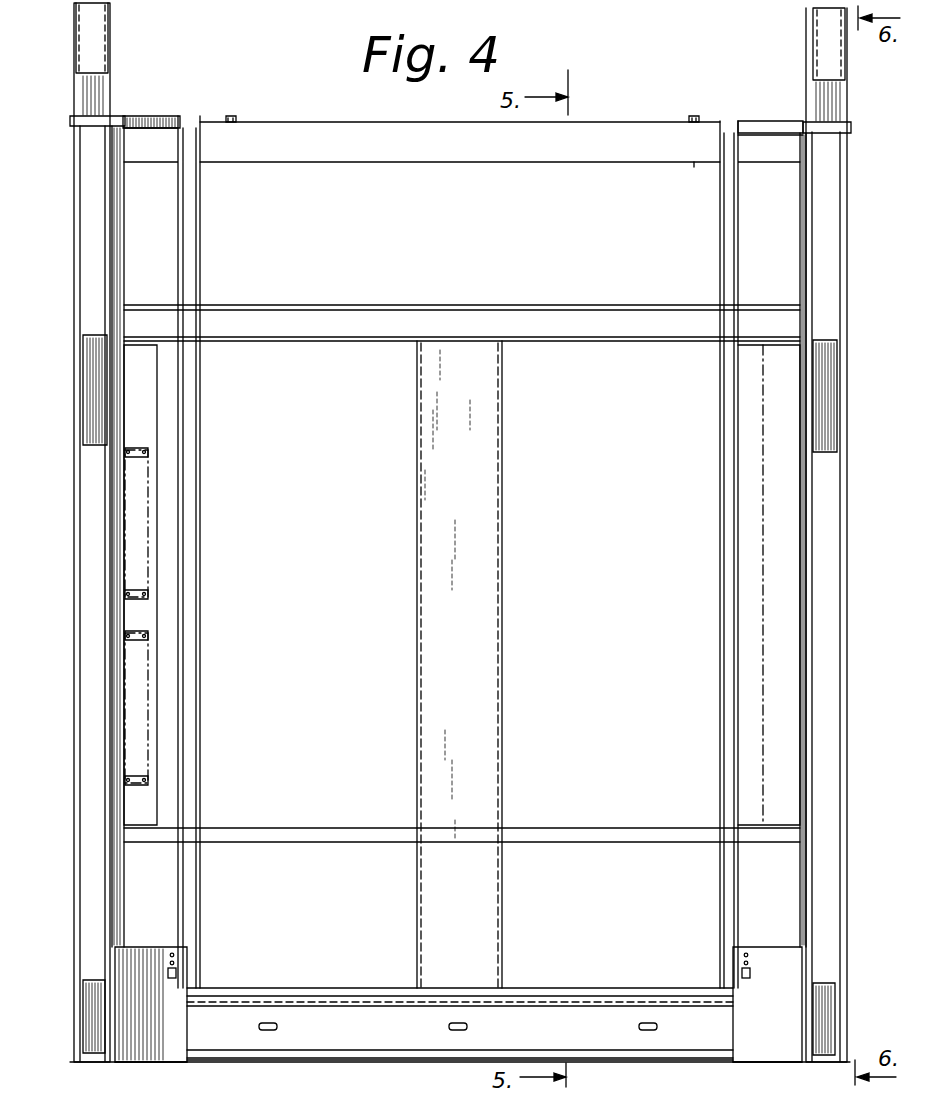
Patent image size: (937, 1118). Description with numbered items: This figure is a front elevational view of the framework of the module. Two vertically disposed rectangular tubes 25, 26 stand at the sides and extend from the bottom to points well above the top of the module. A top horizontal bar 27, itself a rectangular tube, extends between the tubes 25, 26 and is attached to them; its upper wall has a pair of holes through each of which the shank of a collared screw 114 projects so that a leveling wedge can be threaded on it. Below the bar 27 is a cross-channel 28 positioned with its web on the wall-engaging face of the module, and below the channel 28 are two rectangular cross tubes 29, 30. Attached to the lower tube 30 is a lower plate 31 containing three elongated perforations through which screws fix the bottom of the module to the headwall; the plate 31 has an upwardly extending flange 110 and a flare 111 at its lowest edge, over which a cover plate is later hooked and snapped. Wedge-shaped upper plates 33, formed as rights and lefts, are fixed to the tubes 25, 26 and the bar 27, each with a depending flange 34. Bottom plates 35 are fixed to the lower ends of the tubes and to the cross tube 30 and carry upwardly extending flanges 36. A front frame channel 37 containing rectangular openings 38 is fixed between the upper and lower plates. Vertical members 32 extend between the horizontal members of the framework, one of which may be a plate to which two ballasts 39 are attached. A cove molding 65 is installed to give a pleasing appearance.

The rectangular tube 25 is at (823, 42).
The rectangular tube 26 is at (100, 42).
The top horizontal bar 27 is at (378, 150).
The cross-channel 28 is at (386, 310).
The cross tube 29 is at (325, 830).
The cross tube 30 is at (278, 988).
The lower plate 31 is at (612, 1038).
The panel 32 is at (482, 512).
The upper plate 33 is at (135, 120).
The flange 34 is at (172, 118).
The bottom plate 35 is at (160, 1062).
The flange 36 is at (170, 1038).
The front frame channel 37 is at (123, 258).
The rectangular opening 38 is at (93, 377).
The ballast 39 is at (145, 540).
The cove molding 65 is at (75, 262).
The flange 110 is at (352, 1003).
The flare 111 is at (502, 1058).
The collared screw 114 is at (232, 118).